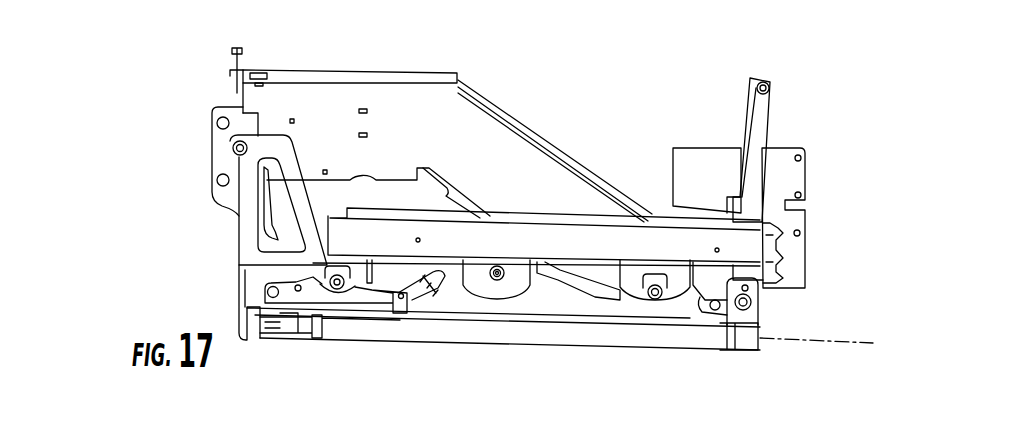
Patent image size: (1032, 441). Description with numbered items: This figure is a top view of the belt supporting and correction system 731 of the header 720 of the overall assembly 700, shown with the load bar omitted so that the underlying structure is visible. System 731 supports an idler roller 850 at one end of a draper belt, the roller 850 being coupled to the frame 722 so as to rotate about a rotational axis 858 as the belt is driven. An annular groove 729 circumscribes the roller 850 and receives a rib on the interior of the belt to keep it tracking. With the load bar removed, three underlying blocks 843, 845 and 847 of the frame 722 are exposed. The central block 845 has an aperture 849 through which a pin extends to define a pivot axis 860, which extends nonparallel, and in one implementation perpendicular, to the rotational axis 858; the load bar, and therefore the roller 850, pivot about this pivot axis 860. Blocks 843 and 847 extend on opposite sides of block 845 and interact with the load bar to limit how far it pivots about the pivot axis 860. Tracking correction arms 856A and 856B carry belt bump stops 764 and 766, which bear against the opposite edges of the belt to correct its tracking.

The vehicle seat assembly 700 is at (138, 74).
The header 720 is at (200, 134).
The belt bump stop 766 is at (234, 147).
The tracking correction arm 856A is at (290, 156).
The frame 722 is at (620, 222).
The tracking correction arm 856B is at (740, 130).
The belt bump stop 764 is at (770, 85).
The belt supporting and correction system 731 is at (806, 118).
The annular groove 729 is at (313, 328).
The block 843 is at (367, 277).
The aperture 849 is at (495, 282).
The pivot axis 860 is at (496, 284).
The block 845 is at (537, 262).
The roller 850 is at (628, 342).
The block 847 is at (688, 292).
The rotational axis 858 is at (810, 342).